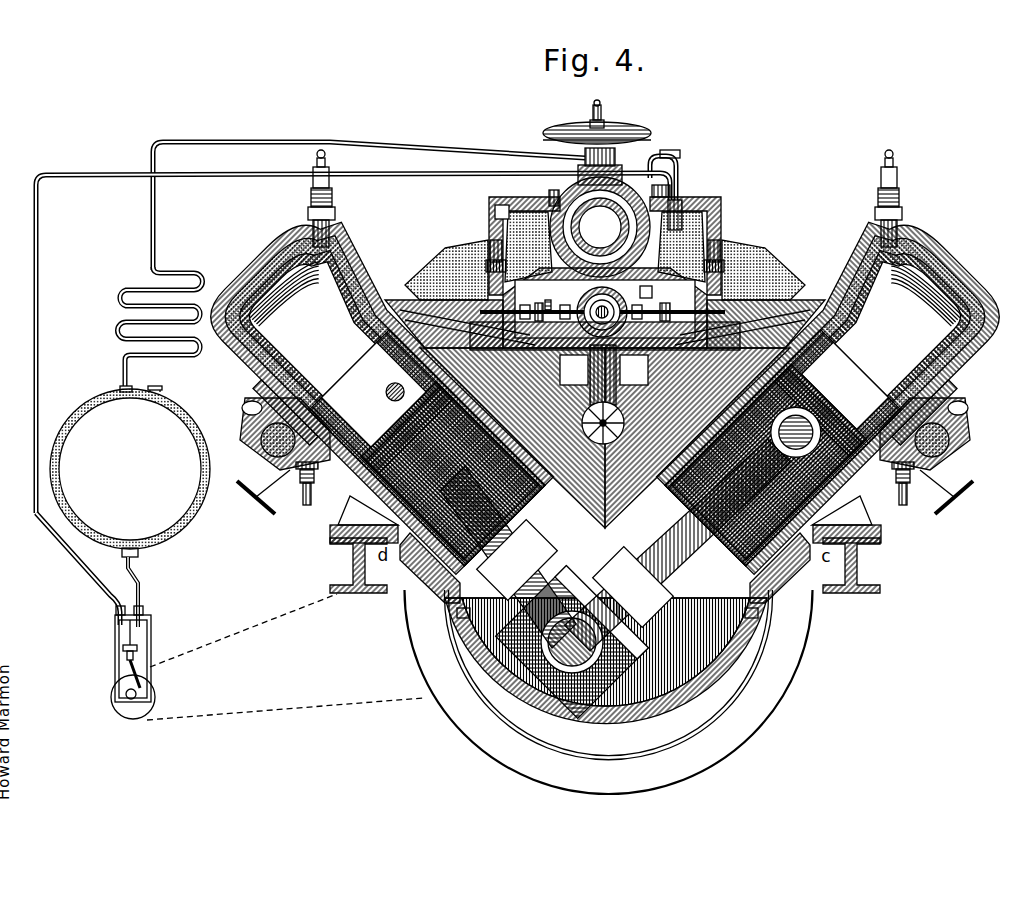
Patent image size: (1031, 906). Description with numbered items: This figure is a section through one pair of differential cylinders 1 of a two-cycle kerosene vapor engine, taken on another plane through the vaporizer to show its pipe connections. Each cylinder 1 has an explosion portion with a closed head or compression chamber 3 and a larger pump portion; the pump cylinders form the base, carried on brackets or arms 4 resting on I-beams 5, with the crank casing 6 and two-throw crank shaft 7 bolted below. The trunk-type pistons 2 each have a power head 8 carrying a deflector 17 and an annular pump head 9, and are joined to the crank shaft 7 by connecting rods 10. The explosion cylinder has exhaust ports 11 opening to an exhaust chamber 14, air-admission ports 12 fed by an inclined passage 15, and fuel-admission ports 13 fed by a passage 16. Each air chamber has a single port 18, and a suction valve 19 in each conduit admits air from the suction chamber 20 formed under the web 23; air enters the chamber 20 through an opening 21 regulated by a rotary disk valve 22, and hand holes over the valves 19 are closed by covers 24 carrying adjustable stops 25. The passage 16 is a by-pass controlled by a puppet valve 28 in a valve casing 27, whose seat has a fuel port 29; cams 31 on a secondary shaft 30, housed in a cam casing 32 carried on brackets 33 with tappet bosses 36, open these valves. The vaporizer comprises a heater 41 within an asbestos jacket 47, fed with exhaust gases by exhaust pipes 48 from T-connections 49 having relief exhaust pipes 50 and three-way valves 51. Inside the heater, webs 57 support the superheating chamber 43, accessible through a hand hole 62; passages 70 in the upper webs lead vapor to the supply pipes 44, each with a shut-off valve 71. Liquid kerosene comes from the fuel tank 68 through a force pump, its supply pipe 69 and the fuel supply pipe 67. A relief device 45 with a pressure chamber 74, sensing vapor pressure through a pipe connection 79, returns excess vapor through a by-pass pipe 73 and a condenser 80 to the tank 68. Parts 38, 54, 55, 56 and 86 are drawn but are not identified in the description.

The cylinders 1 is at (285, 241).
The pistons 2 is at (760, 494).
The compression chamber 3 is at (240, 300).
The brackets or arms 4 is at (333, 531).
The I-beams 5 is at (361, 594).
The crank casing 6 is at (617, 706).
The crank shaft 7 is at (556, 662).
The power head 8 is at (870, 358).
The pump head 9 is at (785, 571).
The connecting rods 10 is at (575, 574).
The exhaust ports 11 is at (605, 448).
The air-admission ports 12 is at (399, 390).
The fuel-admission ports 13 is at (395, 300).
The exhaust chamber 14 is at (268, 398).
The passage 15 is at (405, 296).
The passage 16 is at (412, 290).
The deflector 17 is at (373, 318).
The port 18 is at (775, 427).
The suction valve 19 is at (656, 432).
The suction chamber 20 is at (613, 461).
The opening 21 is at (600, 512).
The rotary disk valve 22 is at (612, 446).
The web 23 is at (470, 406).
The covers 24 is at (665, 305).
The adjustable stop 25 is at (650, 284).
The valve casing 27 is at (538, 304).
The by-pass puppet valve 28 is at (455, 290).
The fuel port 29 is at (440, 280).
The secondary shaft 30 is at (605, 309).
The cams 31 is at (637, 303).
The cam casing 32 is at (600, 227).
The brackets 33 is at (562, 304).
The bosses 36 is at (547, 300).
The cam 38 is at (602, 306).
The heater 41 is at (582, 175).
The superheating chamber 43 is at (565, 206).
The vapor-fuel supply pipes 44 is at (489, 216).
The relief device 45 is at (615, 128).
The heat non-conducting jacket 47 is at (500, 205).
The exhaust pipes 48 is at (488, 250).
The T-connection 49 is at (600, 505).
The relief exhaust pipe 50 is at (242, 409).
The three-way valve 51 is at (255, 436).
The valve spring 54 is at (604, 488).
The collar 55 is at (605, 477).
The lever 56 is at (978, 497).
The connecting webs 57 is at (553, 188).
The hand hole 62 is at (525, 303).
The liquid fuel supply pipe 67 is at (36, 288).
The fuel tank 68 is at (130, 506).
The supply pipe 69 is at (136, 638).
The passages 70 is at (684, 205).
The shut-off valve 71 is at (482, 262).
The by-pass connection 73 is at (270, 142).
The pressure chamber 74 is at (585, 126).
The pipe connection 79 is at (662, 152).
The condenser 80 is at (118, 315).
The adjusting screw 86 is at (599, 102).